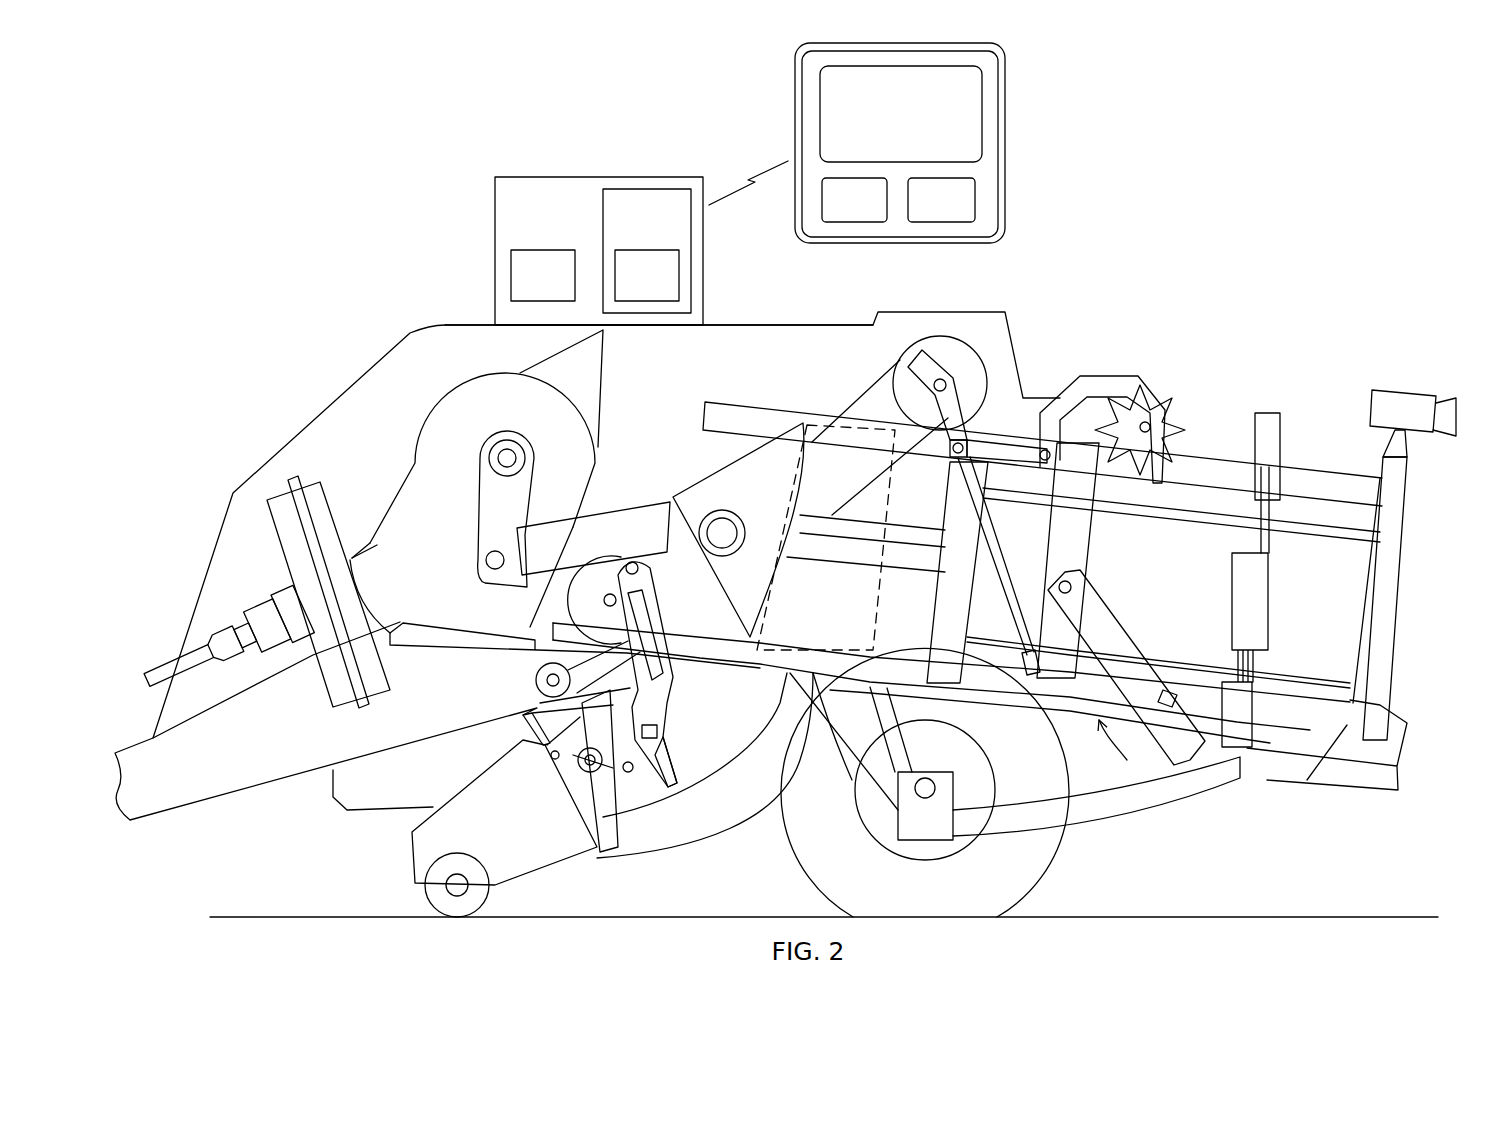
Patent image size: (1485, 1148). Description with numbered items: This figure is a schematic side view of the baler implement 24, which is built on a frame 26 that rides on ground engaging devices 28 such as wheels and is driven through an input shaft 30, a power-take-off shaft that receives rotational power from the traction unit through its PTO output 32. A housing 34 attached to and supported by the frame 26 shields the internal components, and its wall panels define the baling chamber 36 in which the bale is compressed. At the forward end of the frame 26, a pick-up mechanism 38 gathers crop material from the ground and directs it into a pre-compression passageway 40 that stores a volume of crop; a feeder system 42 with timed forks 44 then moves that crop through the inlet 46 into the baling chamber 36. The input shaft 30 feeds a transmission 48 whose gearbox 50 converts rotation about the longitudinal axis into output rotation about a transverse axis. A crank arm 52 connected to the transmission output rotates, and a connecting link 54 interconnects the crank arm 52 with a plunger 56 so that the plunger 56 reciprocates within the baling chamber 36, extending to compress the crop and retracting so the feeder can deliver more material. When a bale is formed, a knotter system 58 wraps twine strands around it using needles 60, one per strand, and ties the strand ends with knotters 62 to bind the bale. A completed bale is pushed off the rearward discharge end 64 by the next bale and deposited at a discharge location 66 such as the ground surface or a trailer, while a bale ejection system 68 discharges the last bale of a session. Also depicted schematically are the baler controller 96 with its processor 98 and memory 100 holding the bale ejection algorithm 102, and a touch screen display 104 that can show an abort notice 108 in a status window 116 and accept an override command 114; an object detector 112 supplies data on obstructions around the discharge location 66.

The baler implement 24 is at (231, 252).
The frame 26 is at (195, 760).
The ground engaging devices 28 is at (1013, 863).
The input shaft 30 is at (168, 668).
The PTO output 32 is at (1210, 457).
The housing 34 is at (747, 323).
The baling chamber 36 is at (1175, 578).
The pick-up mechanism 38 is at (412, 850).
The pre-compression passageway 40 is at (683, 817).
The feeder system 42 is at (680, 693).
The forks 44 is at (663, 753).
The inlet 46 is at (832, 737).
The transmission 48 is at (408, 453).
The gearbox 50 is at (463, 418).
The crank arm 52 is at (533, 447).
The connecting link 54 is at (630, 512).
The plunger 56 is at (685, 482).
The knotter system 58 is at (985, 349).
The needles 60 is at (1083, 782).
The knotters 62 is at (950, 335).
The rearward discharge end 64 is at (1383, 640).
The discharge location 66 is at (1373, 917).
The bale ejection system 68 is at (1157, 787).
The baler controller 96 is at (560, 228).
The processor 98 is at (560, 290).
The memory 100 is at (672, 233).
The bale ejection algorithm 102 is at (672, 290).
The touch screen display 104 is at (1007, 113).
The abort notice 108 is at (879, 213).
The object detector 112 is at (1408, 400).
The override command 114 is at (966, 213).
The status window 116 is at (920, 125).